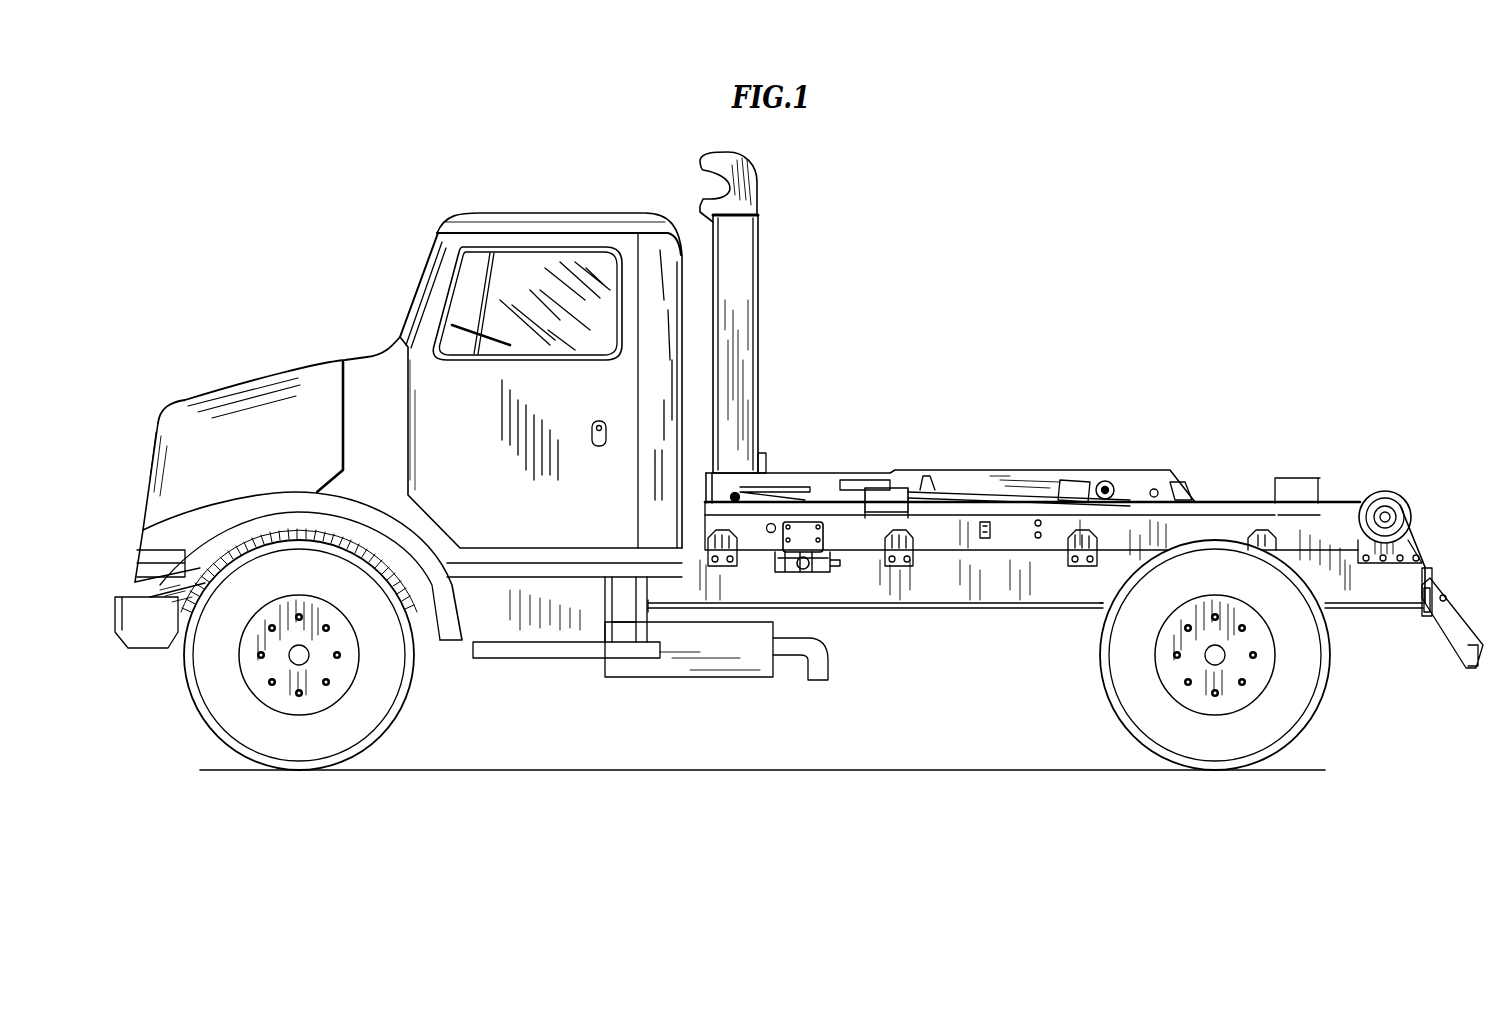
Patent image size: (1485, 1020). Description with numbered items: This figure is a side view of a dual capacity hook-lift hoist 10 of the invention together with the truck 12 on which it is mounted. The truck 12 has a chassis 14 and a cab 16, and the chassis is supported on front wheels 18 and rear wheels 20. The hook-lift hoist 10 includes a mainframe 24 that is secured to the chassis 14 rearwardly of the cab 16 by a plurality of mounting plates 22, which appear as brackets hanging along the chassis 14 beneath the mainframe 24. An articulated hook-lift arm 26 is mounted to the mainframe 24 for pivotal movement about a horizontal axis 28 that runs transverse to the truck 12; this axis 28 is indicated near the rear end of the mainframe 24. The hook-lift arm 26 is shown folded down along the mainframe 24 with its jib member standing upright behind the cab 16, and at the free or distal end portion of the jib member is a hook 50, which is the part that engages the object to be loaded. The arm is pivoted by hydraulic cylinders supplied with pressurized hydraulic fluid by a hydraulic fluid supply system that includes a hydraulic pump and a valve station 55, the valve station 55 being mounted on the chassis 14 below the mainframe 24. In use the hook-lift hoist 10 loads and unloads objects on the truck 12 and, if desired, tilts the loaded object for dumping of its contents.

The hook-lift hoist 10 is at (923, 407).
The truck 12 is at (376, 333).
The chassis 14 is at (887, 595).
The cab 16 is at (283, 390).
The front wheels 18 is at (382, 690).
The rear wheels 20 is at (1290, 720).
The mounting plates 22 is at (723, 570).
The mainframe 24 is at (1035, 537).
The articulated hook-lift arm 26 is at (940, 470).
The horizontal axis 28 is at (1385, 517).
The hook 50 is at (752, 183).
The valve station 55 is at (800, 585).